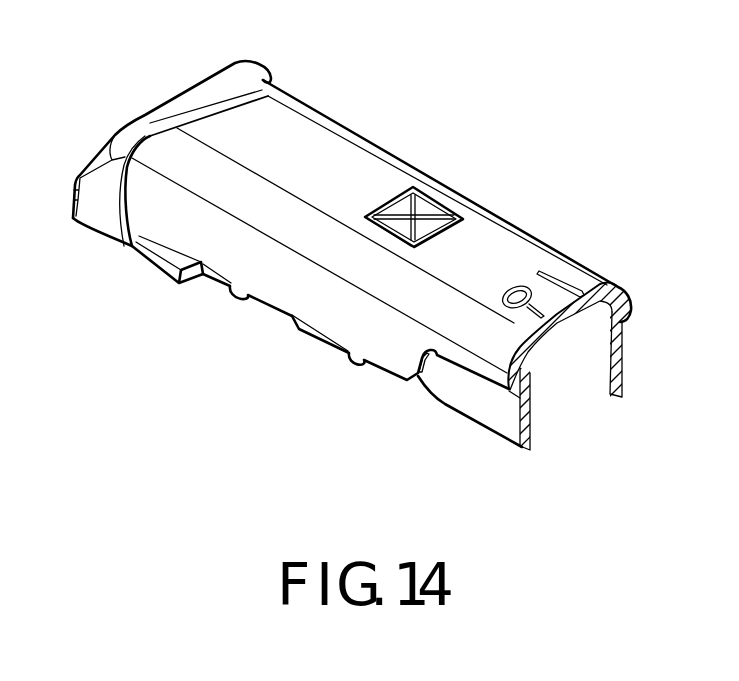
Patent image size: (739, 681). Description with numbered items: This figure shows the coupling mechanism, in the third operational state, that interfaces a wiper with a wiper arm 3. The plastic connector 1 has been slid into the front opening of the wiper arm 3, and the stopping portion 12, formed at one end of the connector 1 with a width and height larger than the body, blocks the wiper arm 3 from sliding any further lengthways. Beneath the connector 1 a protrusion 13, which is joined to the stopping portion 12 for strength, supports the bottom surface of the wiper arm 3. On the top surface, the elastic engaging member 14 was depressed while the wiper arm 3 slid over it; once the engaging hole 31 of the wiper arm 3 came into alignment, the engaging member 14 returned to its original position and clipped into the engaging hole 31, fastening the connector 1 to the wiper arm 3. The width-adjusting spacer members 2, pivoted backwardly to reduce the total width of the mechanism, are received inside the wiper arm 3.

The connector 1 is at (150, 96).
The stopping portion 12 is at (103, 160).
The protrusion 13 is at (168, 255).
The engaging member 14 is at (432, 206).
The engaging hole 31 is at (390, 231).
The wiper arm 3 is at (583, 247).
The width-adjusting spacer member 2 is at (625, 350).